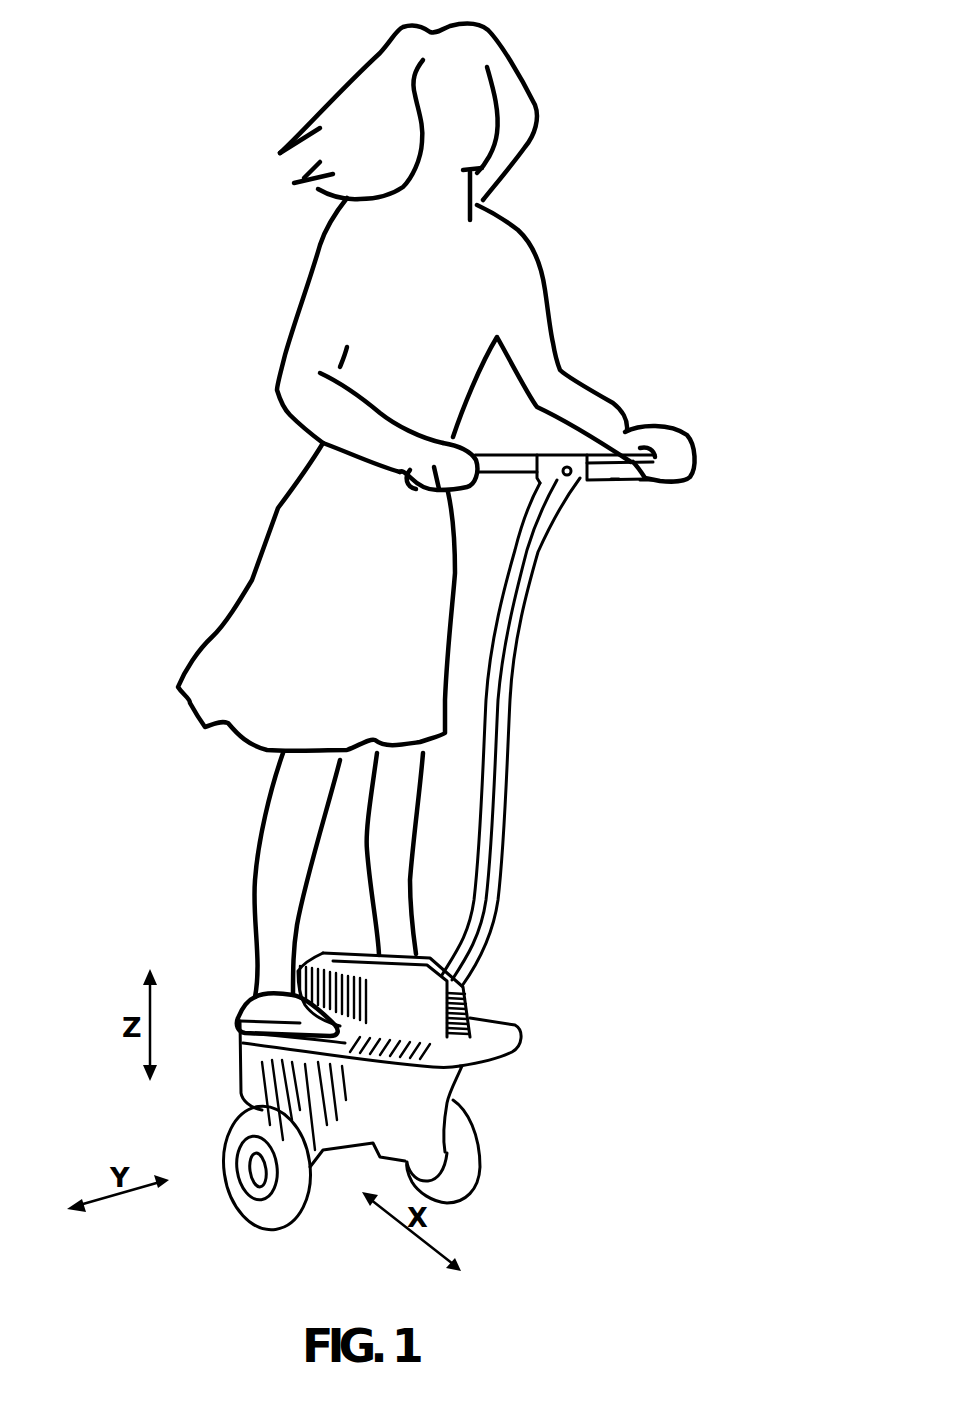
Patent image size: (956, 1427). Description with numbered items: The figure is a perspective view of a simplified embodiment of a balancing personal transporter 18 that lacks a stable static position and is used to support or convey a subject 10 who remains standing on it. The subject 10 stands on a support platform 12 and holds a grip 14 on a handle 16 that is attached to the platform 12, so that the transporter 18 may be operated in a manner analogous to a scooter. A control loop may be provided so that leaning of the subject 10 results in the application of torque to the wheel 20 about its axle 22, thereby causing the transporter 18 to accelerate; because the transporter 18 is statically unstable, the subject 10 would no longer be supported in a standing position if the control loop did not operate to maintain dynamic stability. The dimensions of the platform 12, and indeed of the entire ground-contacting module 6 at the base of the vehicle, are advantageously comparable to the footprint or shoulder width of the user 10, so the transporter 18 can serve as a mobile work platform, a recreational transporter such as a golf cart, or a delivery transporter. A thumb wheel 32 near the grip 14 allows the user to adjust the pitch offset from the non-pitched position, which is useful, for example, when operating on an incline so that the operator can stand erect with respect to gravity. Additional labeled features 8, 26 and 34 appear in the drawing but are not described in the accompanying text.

The ground-contacting module 6 is at (684, 998).
The platform housing 8 is at (240, 1032).
The subject 10 is at (513, 240).
The support platform 12 is at (505, 1052).
The grip 14 is at (577, 483).
The handle 16 is at (510, 692).
The personal transporter 18 is at (115, 495).
The wheel 20 is at (277, 1230).
The axle 22 is at (262, 1170).
The direction of motion 26 is at (544, 1113).
The thumb wheel 32 is at (643, 483).
The handlebar control section 34 is at (615, 483).